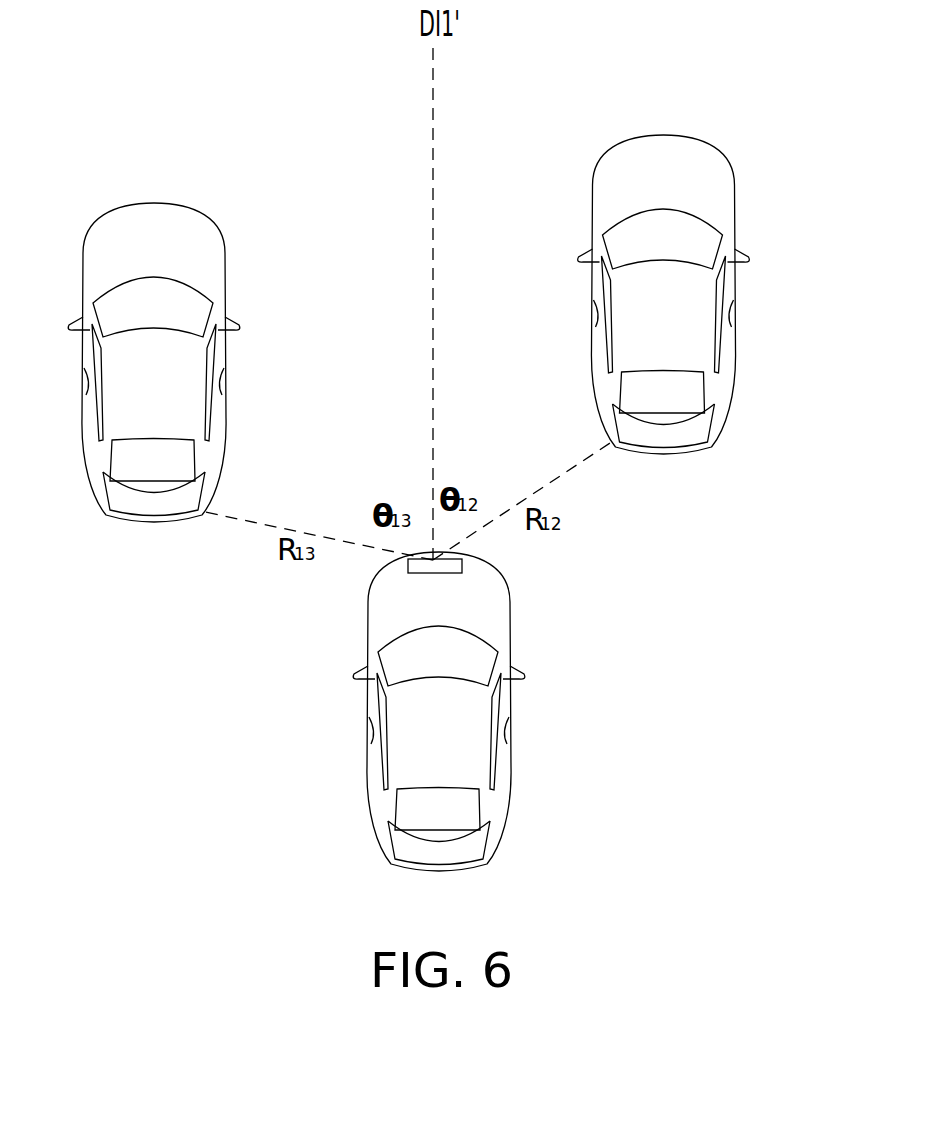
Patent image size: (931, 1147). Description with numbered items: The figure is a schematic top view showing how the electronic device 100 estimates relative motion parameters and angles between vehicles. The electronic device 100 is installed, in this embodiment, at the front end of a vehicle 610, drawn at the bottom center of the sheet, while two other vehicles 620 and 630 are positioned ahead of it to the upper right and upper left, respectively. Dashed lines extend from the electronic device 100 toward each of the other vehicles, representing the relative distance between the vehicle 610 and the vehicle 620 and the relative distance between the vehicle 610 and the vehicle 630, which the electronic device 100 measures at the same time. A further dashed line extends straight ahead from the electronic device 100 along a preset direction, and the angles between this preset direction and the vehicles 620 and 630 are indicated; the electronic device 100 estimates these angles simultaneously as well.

The electronic device 100 is at (462, 567).
The vehicle 610 is at (510, 720).
The vehicle 620 is at (735, 312).
The vehicle 630 is at (225, 257).